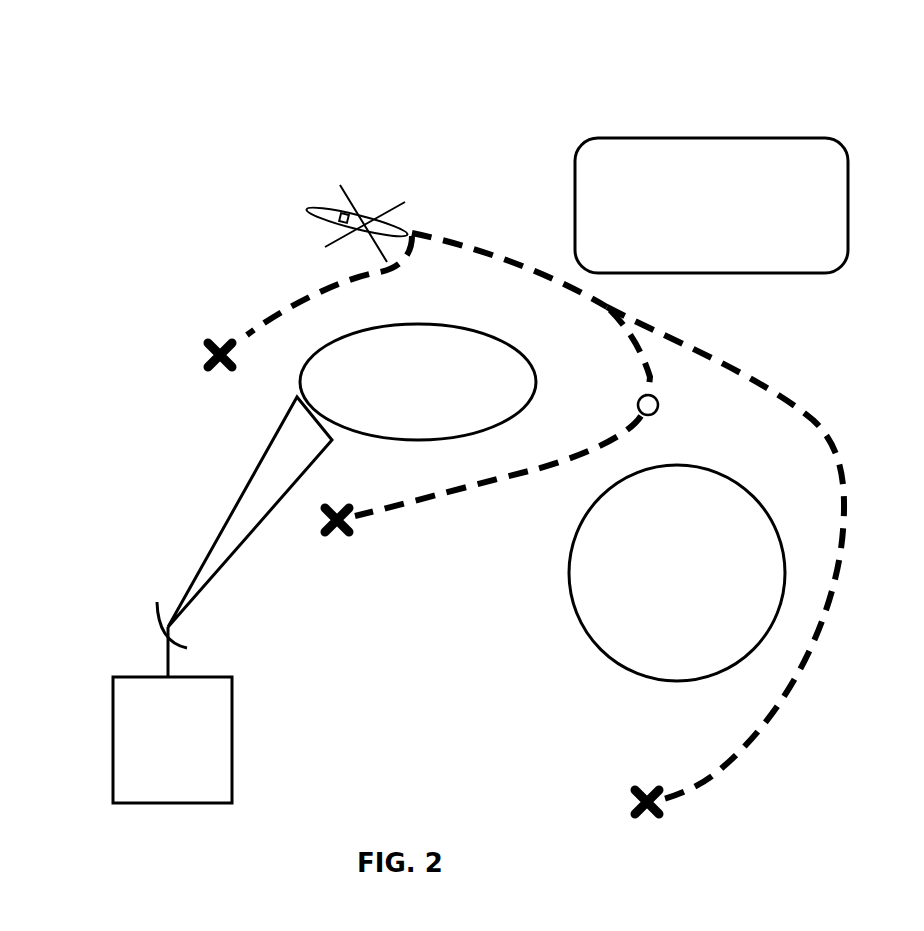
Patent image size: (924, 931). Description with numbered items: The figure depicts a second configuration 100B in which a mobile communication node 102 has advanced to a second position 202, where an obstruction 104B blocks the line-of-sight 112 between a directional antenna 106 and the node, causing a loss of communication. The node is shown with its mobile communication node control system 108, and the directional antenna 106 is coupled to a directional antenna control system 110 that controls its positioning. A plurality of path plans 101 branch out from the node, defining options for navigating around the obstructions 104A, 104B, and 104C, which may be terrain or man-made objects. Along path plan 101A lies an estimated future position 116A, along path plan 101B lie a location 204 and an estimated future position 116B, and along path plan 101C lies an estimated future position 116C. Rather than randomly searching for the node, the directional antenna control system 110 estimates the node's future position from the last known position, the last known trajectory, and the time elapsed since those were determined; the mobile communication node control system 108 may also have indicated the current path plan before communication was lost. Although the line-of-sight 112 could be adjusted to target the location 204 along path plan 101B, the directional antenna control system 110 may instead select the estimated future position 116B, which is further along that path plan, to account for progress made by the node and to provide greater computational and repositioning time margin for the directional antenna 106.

The second configuration 100B is at (616, 45).
The path plans 101 is at (505, 170).
The path plan 101A is at (377, 273).
The path plan 101B is at (432, 502).
The path plan 101C is at (808, 413).
The mobile communication node 102 is at (320, 207).
The obstruction 104A is at (711, 205).
The obstruction 104B is at (418, 382).
The obstruction 104C is at (677, 573).
The directional antenna 106 is at (188, 647).
The mobile communication node control system 108 is at (323, 217).
The directional antenna control system 110 is at (172, 740).
The line-of-sight 112 is at (213, 542).
The estimated future position 116A is at (205, 365).
The estimated future position 116B is at (323, 533).
The estimated future position 116C is at (632, 793).
The second position 202 is at (373, 175).
The location 204 is at (638, 403).